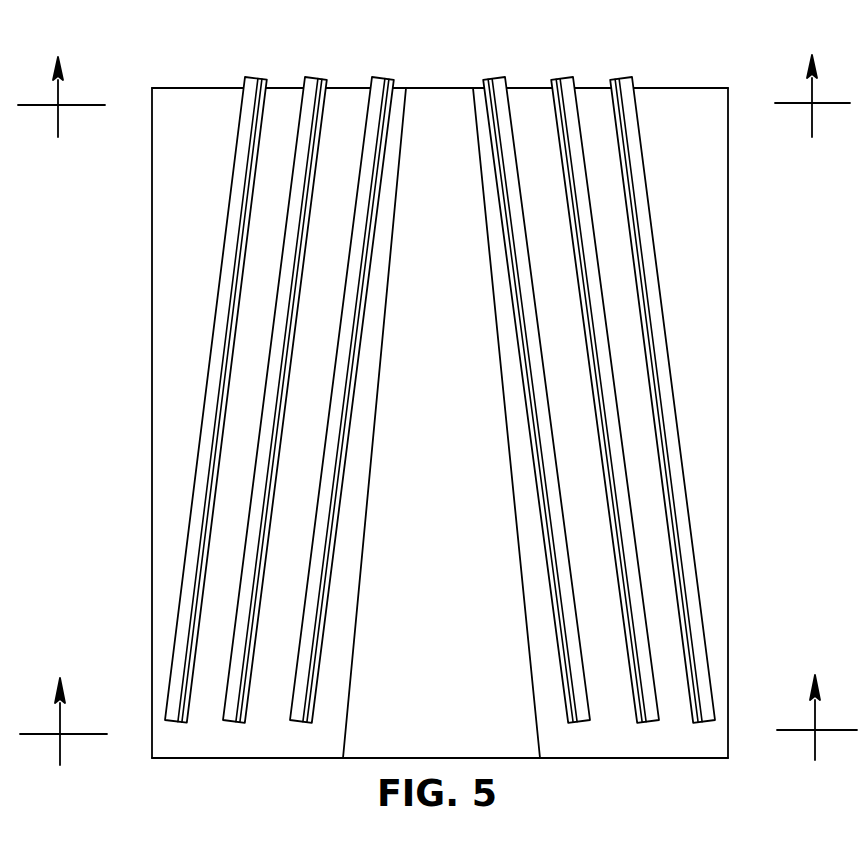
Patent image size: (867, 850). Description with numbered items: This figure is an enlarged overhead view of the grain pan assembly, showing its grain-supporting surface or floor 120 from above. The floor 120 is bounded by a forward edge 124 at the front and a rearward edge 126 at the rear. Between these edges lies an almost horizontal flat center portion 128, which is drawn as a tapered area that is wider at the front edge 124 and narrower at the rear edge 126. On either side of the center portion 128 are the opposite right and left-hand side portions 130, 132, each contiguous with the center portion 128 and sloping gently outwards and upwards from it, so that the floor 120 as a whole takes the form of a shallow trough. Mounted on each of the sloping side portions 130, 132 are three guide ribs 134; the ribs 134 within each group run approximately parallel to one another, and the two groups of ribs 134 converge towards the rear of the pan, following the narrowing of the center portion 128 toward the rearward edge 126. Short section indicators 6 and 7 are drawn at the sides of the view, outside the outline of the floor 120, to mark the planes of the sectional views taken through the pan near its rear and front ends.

The grain-supporting surface or floor 120 is at (122, 300).
The forward edge 124 is at (637, 759).
The rearward edge 126 is at (692, 86).
The center portion 128 is at (458, 631).
The right-hand side portion 130 is at (207, 153).
The left-hand side portion 132 is at (699, 150).
The guide ribs 134 is at (257, 82).
The section line 6- 6 is at (438, 720).
The section line 7- 7 is at (434, 96).